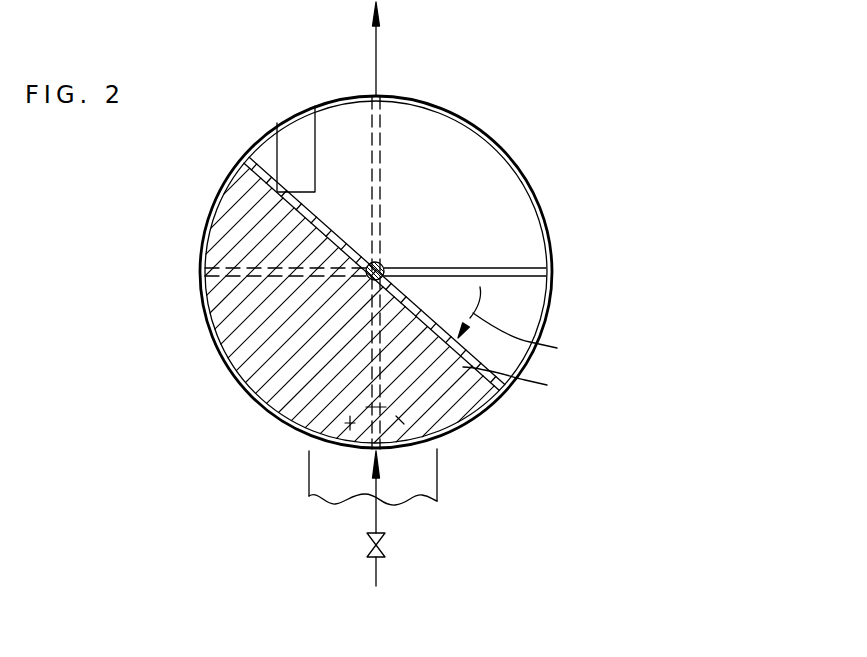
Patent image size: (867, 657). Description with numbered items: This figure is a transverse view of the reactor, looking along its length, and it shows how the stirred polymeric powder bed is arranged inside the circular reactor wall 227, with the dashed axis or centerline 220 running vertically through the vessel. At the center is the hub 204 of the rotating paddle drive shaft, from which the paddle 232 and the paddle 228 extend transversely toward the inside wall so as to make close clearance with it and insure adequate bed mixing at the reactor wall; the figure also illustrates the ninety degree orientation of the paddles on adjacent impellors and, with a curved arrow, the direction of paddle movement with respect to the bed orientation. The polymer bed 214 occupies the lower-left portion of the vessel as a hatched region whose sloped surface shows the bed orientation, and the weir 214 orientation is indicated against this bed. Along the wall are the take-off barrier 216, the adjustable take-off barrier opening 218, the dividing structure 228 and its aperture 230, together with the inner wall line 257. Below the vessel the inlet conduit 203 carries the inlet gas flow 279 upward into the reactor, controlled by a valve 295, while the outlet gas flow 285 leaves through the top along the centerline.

The inlet conduit 203 is at (420, 483).
The agitator shaft hub 204 is at (378, 267).
The weir 214 is at (480, 370).
The take-off barrier 216 is at (505, 203).
The adjustable take-off barrier opening 218 is at (295, 145).
The vertical axis centerline 220 is at (383, 135).
The vessel wall 227 is at (490, 145).
The dividing structure 228 is at (523, 303).
The aperture 230 is at (335, 423).
The paddle arm 232 is at (520, 267).
The vessel inner wall 257 is at (503, 152).
The inlet gas flow 279 is at (372, 481).
The outlet gas flow 285 is at (378, 90).
The valve 295 is at (388, 543).